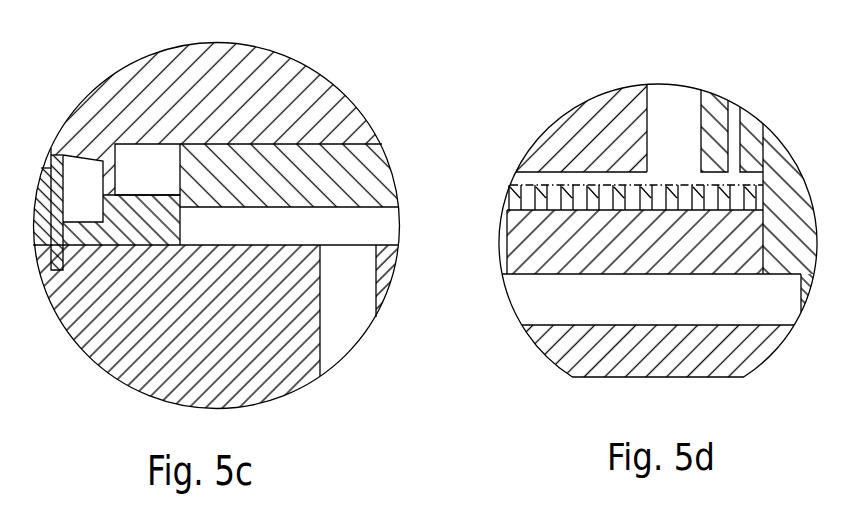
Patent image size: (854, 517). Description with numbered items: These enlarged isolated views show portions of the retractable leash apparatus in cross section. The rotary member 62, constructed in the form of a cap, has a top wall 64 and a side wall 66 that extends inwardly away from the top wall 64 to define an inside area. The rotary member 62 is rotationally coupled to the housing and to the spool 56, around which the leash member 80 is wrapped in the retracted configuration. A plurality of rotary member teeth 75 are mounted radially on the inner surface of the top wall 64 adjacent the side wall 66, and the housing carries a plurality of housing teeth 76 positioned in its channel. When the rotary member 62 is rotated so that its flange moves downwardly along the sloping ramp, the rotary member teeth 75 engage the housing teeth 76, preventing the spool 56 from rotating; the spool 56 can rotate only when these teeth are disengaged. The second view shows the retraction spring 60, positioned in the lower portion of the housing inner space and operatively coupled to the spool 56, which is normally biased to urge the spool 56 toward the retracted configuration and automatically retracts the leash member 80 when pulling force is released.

In FIG. 5C, the spool 56 is at (373, 163).
In FIG. 5D, the spool 56 is at (622, 273).
In FIG. 5D, the retraction spring 60 is at (636, 119).
In FIG. 5C, the rotary member 62 is at (346, 86).
In FIG. 5C, the top wall 64 is at (133, 70).
In FIG. 5C, the side wall 66 is at (33, 216).
In FIG. 5C, the rotary member teeth 75 is at (66, 148).
In FIG. 5C, the housing teeth 76 is at (118, 113).
In FIG. 5C, the leash member 80 is at (145, 390).